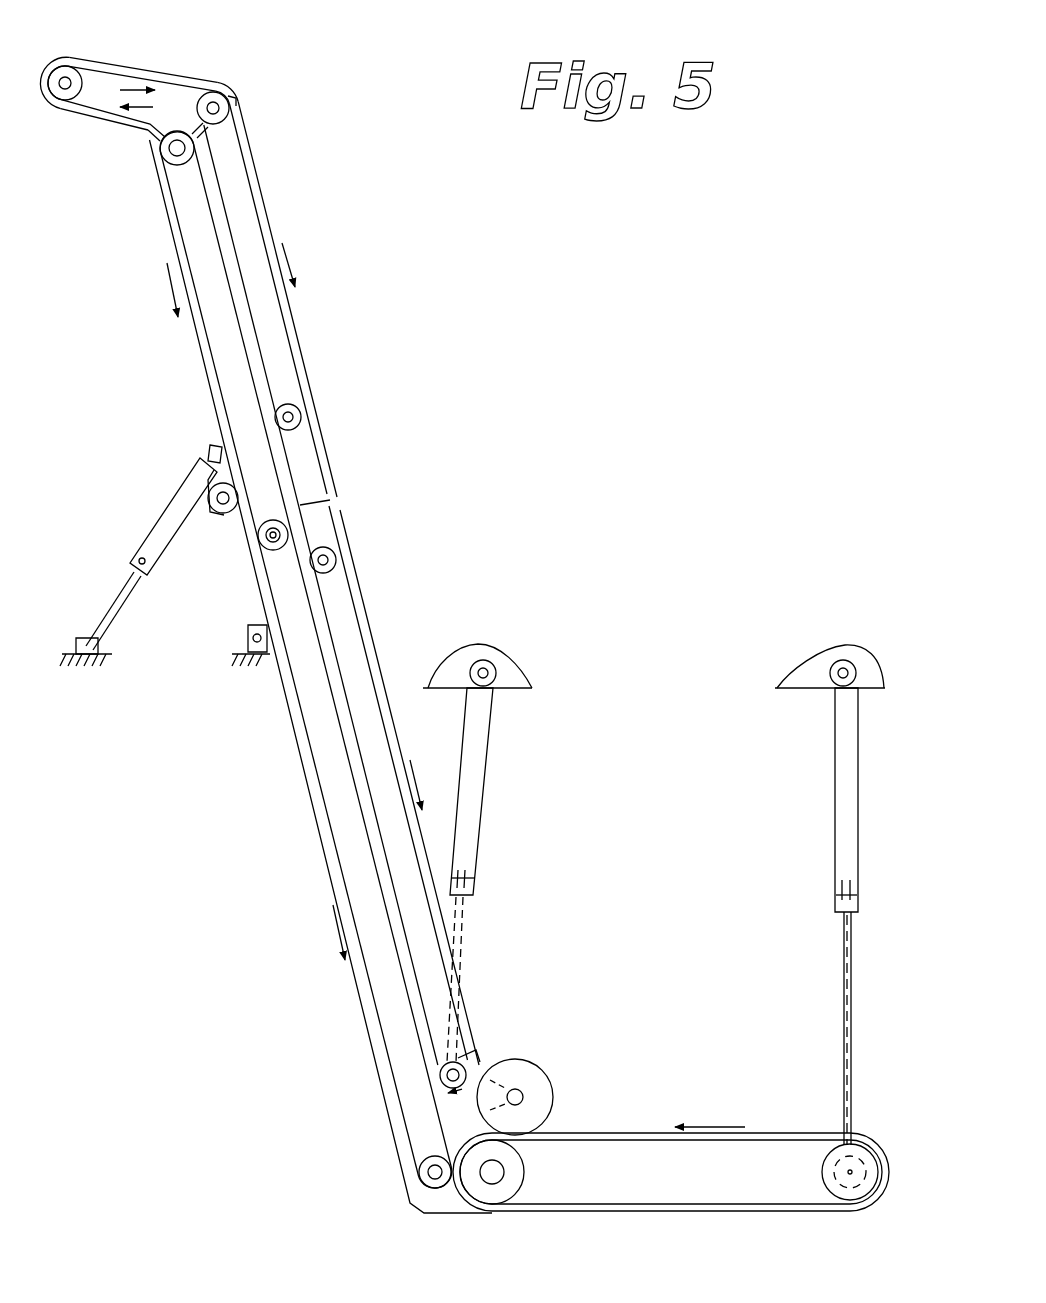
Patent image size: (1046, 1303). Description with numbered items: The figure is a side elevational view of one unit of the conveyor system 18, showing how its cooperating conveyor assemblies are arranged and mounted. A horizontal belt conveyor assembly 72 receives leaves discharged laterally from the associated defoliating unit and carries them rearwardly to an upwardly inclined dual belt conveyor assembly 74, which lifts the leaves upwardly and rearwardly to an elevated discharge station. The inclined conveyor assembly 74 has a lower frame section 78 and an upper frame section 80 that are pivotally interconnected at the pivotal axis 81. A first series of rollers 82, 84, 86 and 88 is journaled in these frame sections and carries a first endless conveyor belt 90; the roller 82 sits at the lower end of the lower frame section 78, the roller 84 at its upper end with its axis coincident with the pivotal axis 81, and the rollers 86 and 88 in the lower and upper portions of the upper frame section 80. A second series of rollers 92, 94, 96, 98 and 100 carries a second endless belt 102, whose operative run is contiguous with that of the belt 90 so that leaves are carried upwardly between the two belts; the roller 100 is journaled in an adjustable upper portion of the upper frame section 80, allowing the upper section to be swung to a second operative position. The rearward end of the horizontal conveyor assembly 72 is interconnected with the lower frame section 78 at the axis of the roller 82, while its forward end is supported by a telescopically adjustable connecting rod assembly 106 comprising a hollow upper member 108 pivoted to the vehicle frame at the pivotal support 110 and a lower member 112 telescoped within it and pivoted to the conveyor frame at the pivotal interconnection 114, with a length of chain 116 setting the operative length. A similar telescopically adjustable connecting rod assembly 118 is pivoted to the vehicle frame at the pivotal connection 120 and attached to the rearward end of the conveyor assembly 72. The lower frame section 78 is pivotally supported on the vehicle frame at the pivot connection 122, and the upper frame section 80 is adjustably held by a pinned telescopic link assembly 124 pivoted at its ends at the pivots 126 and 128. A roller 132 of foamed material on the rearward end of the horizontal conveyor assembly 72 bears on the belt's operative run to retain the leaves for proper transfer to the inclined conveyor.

The conveyor system 18 is at (433, 572).
The horizontal belt conveyor assembly 72 is at (640, 1135).
The upwardly inclined dual belt conveyor assembly 74 is at (268, 748).
The lower frame section 78 is at (320, 858).
The upper frame section 80 is at (205, 372).
The pivotal axis 81 is at (262, 552).
The roller 82 is at (420, 1172).
The roller 84 is at (262, 537).
The roller 86 is at (215, 495).
The roller 88 is at (165, 148).
The first endless conveyor belt 90 is at (323, 660).
The roller 92 is at (465, 1068).
The roller 94 is at (332, 557).
The roller 96 is at (298, 417).
The roller 98 is at (236, 106).
The roller 100 is at (75, 70).
The second endless belt 102 is at (333, 637).
The telescopically adjustable connecting rod assembly 106 is at (833, 843).
The hollow upper member 108 is at (835, 765).
The pivotal support 110 is at (830, 680).
The lower member 112 is at (843, 962).
The pivotal interconnection 114 is at (847, 1145).
The length of chain 116 is at (843, 1015).
The telescopically adjustable connecting rod assembly 118 is at (487, 860).
The pivotal connection 120 is at (492, 676).
The pivot connection 122 is at (244, 640).
The pinned telescopic link assembly 124 is at (160, 536).
The pivot 126 is at (210, 455).
The pivot 128 is at (100, 650).
The roller of foamed material 132 is at (522, 1085).